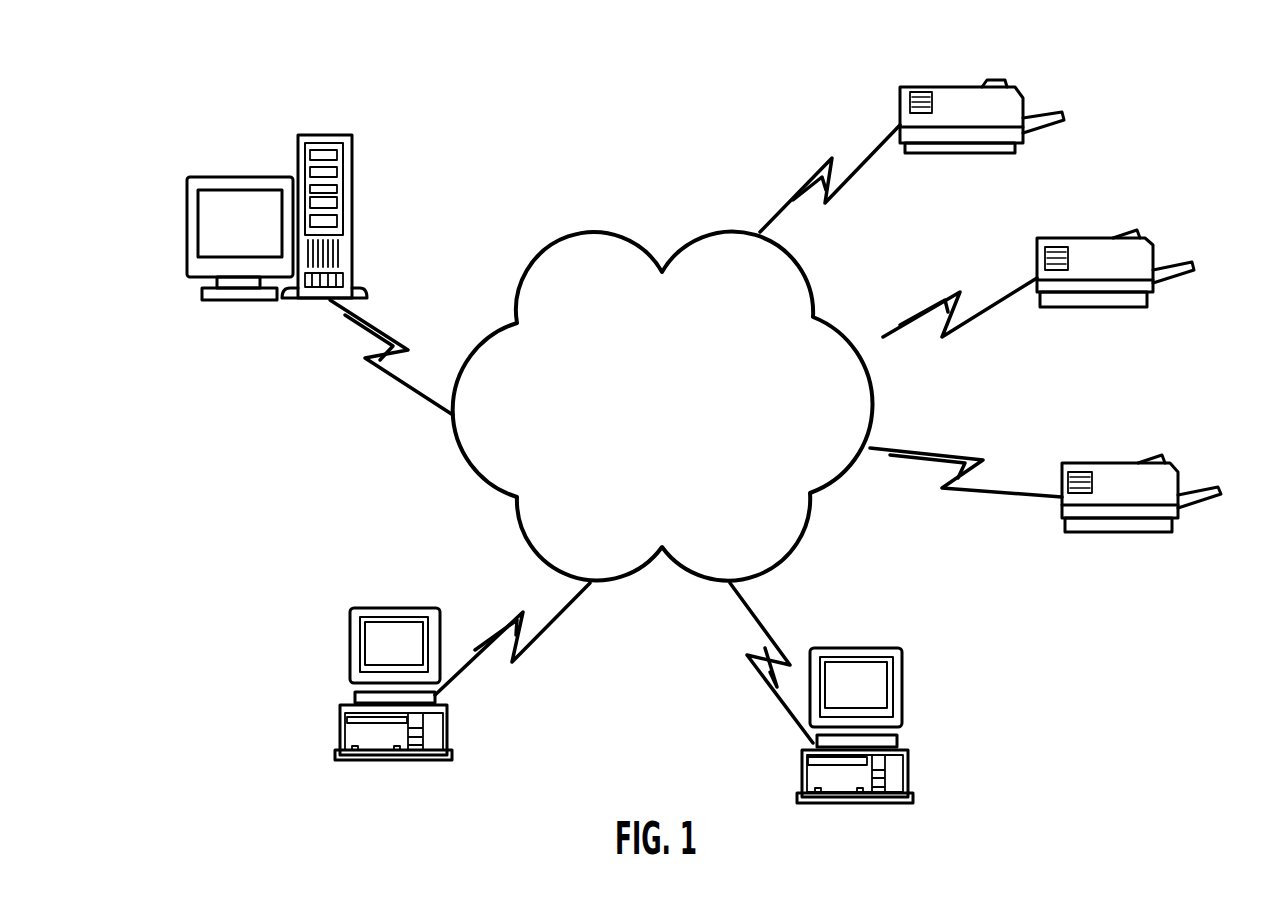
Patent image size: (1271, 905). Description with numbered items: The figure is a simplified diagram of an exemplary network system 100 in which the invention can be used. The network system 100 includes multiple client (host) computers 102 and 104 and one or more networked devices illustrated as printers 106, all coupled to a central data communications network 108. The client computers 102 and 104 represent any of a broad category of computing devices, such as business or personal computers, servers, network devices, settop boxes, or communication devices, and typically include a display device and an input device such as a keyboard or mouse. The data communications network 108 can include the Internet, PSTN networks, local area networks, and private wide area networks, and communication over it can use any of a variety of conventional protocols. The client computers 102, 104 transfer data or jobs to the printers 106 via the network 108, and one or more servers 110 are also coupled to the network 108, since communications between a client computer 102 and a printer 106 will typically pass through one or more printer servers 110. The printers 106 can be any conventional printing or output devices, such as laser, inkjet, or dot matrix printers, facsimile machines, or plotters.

The network system 100 is at (675, 112).
The client computer 102 is at (375, 608).
The client computer 104 is at (903, 667).
The printer 106 is at (935, 87).
The data communications network 108 is at (628, 242).
The server 110 is at (365, 168).